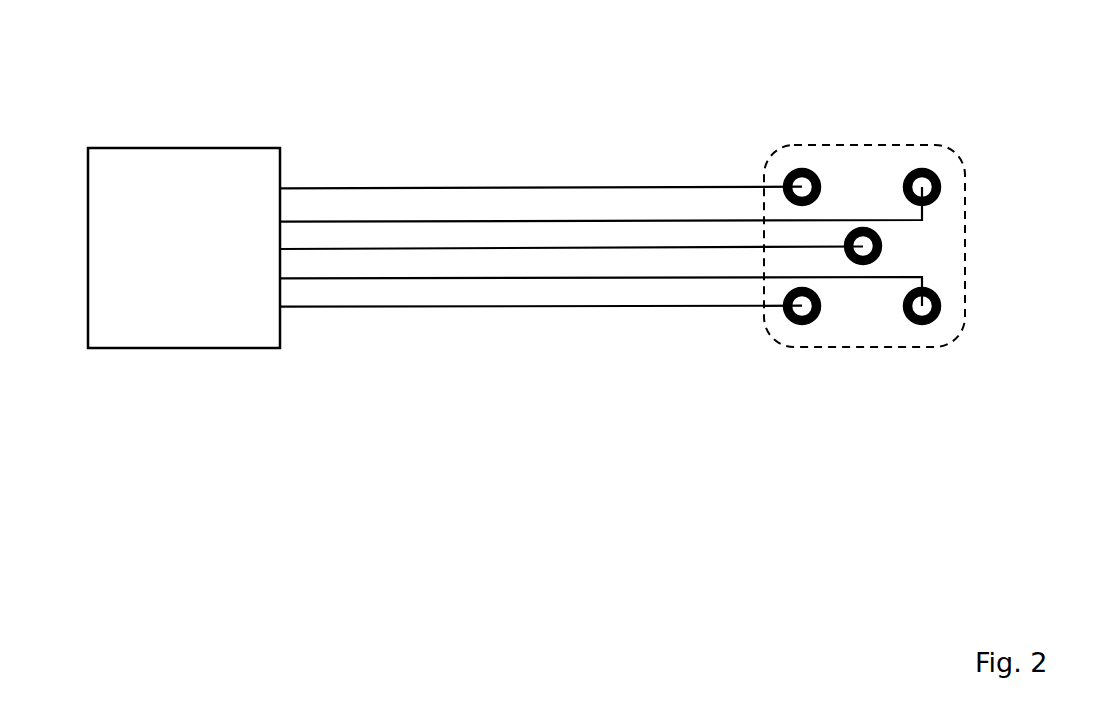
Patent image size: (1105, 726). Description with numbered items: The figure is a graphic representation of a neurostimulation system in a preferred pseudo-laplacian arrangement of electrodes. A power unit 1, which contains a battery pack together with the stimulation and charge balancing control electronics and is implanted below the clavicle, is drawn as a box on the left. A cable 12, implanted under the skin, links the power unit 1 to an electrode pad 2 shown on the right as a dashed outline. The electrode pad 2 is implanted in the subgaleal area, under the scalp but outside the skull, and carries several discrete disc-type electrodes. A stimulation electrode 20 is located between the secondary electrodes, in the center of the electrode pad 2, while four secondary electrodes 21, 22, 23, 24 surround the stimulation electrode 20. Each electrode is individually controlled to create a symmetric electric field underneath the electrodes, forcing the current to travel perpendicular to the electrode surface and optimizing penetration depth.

The power unit 1 is at (185, 148).
The cable 12 is at (554, 170).
The electrode pad 2 is at (840, 348).
The stimulation electrode 20 is at (884, 252).
The secondary electrode 21 is at (822, 187).
The secondary electrode 22 is at (922, 168).
The secondary electrode 23 is at (822, 306).
The secondary electrode 24 is at (935, 322).